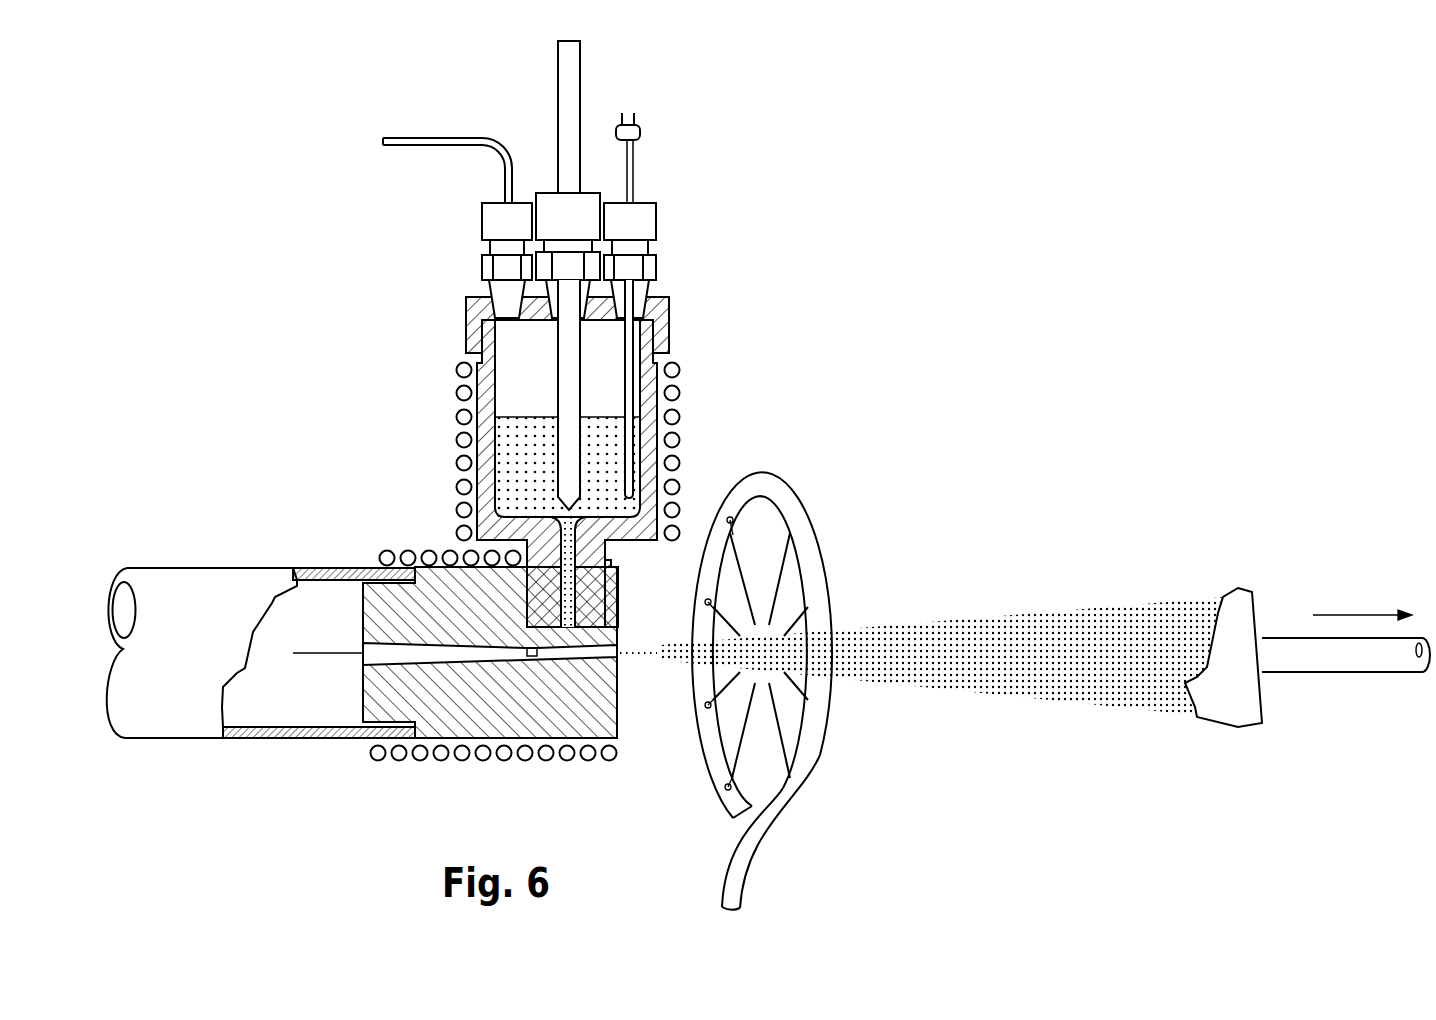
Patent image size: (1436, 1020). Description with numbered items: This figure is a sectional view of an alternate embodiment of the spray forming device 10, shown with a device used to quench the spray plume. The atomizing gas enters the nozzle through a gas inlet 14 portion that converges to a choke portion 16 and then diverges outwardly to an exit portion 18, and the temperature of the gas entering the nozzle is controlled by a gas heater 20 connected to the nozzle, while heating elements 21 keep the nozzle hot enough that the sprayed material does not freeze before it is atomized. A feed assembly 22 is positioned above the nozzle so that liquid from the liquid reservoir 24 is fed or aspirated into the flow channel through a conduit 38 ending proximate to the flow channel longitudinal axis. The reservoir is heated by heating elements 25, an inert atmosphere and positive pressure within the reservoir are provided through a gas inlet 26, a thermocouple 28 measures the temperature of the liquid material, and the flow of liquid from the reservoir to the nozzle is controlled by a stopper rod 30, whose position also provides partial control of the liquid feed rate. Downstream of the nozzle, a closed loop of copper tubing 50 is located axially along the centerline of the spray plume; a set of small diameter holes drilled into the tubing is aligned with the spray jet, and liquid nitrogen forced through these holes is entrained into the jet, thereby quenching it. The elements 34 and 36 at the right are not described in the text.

The spray forming device 10 is at (186, 263).
The gas inlet portion 14 is at (372, 660).
The choke portion 16 is at (497, 653).
The exit portion 18 is at (603, 655).
The gas heater 20 is at (162, 568).
The heating elements for the nozzle 21 is at (500, 760).
The feed assembly 22 is at (553, 329).
The liquid reservoir 24 is at (478, 433).
The heating elements 25 is at (456, 532).
The gas inlet 26 is at (383, 140).
The thermocouple 28 is at (630, 473).
The stopper rod 30 is at (582, 63).
The substrate holder rod 34 is at (1233, 727).
The substrate 36 is at (1228, 592).
The conduit 38 is at (610, 630).
The closed loop of copper tubing 50 is at (820, 758).